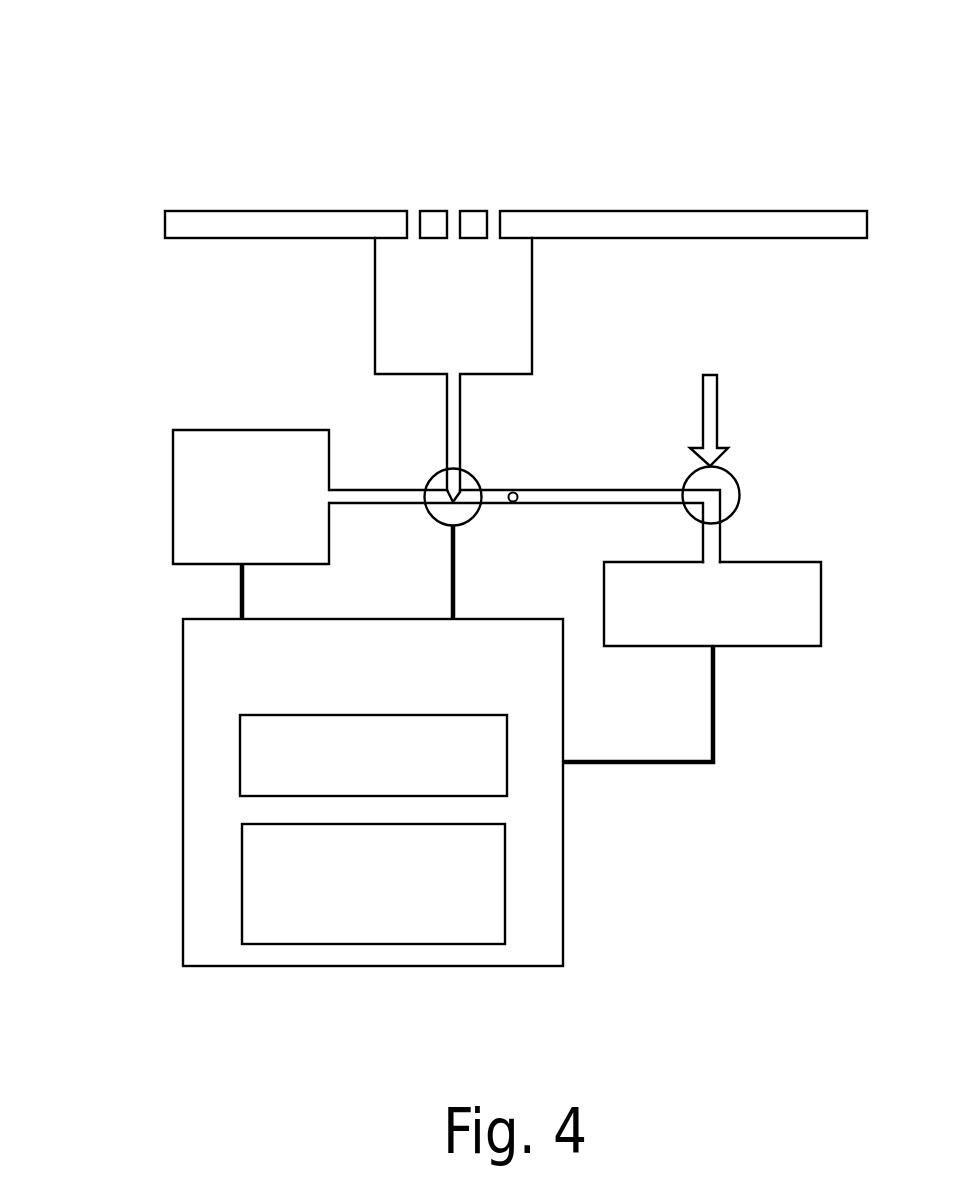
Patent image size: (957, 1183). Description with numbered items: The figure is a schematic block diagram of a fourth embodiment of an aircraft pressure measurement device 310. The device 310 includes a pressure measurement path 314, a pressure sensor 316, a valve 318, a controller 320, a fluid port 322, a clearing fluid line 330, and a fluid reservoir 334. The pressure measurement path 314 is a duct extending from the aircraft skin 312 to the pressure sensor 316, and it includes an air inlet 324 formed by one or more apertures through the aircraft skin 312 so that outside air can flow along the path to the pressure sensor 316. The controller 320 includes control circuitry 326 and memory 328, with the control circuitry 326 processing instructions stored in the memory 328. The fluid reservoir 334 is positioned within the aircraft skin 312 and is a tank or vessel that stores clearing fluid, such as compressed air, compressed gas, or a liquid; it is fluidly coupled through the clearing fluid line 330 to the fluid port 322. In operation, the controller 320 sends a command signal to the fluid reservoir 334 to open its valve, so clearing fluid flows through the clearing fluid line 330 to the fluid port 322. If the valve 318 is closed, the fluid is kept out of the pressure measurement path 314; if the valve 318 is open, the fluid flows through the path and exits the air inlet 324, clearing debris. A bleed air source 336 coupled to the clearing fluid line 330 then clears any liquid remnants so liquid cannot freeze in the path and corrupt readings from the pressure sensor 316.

The aircraft pressure measurement device 310 is at (495, 489).
The aircraft skin 312 is at (648, 223).
The pressure measurement path 314 is at (450, 410).
The pressure sensor 316 is at (205, 497).
The valve 318 is at (473, 518).
The controller 320 is at (397, 690).
The fluid port 322 is at (517, 492).
The air inlet 324 is at (452, 217).
The control circuitry 326 is at (400, 933).
The memory 328 is at (397, 788).
The clearing fluid line 330 is at (722, 542).
The fluid reservoir 334 is at (736, 618).
The bleed air source 336 is at (717, 402).